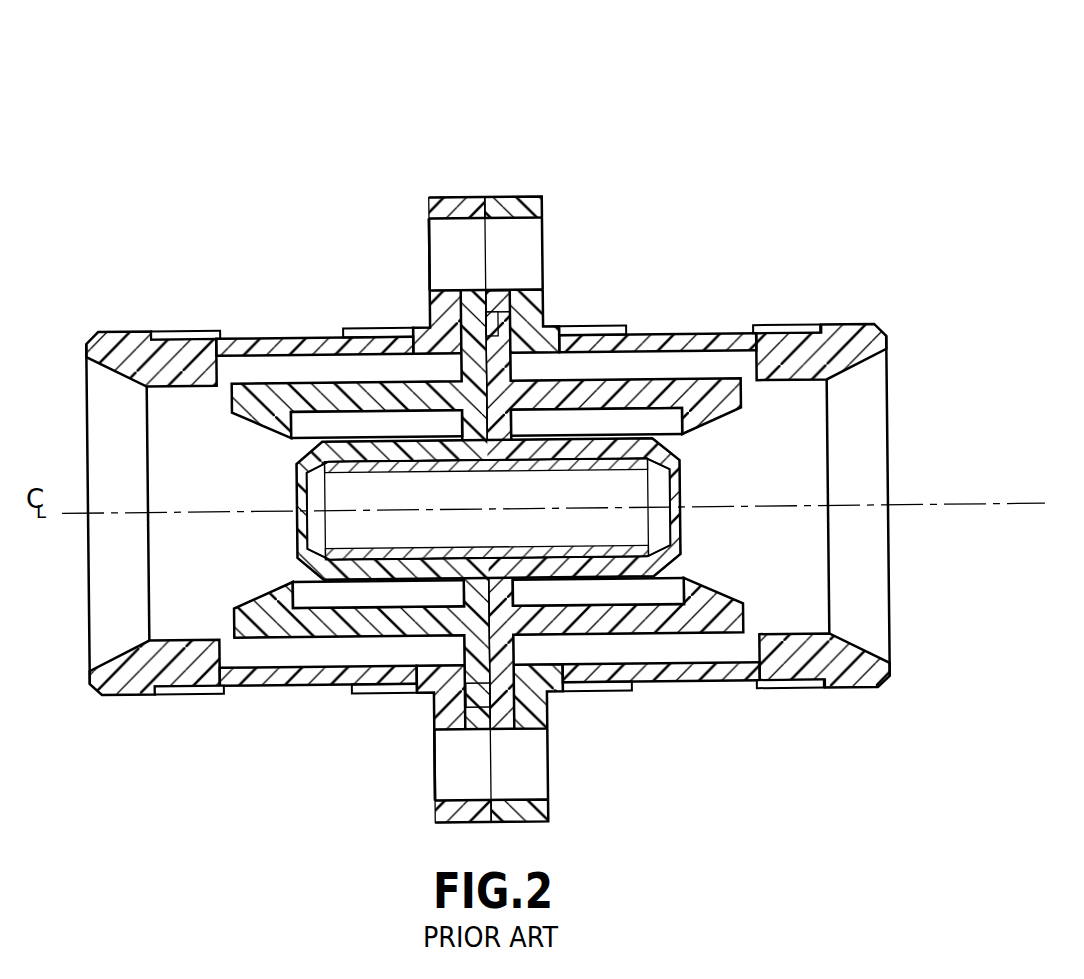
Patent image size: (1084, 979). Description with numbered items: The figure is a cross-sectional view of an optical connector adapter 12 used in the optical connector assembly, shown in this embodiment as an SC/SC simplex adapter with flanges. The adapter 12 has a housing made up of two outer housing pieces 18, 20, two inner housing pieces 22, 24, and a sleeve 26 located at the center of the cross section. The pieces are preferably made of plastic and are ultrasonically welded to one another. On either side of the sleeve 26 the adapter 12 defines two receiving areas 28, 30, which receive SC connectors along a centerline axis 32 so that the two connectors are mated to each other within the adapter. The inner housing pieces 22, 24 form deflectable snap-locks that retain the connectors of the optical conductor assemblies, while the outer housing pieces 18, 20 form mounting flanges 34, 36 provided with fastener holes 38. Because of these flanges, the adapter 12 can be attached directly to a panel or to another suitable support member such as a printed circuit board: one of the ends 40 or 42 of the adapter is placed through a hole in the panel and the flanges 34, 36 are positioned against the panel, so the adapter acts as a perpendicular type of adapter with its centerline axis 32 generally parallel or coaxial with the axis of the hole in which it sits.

The adapter 12 is at (553, 417).
The outer housing piece 18 is at (300, 337).
The outer housing piece 20 is at (652, 335).
The inner housing piece 22 is at (257, 602).
The inner housing piece 24 is at (702, 587).
The sleeve 26 is at (477, 543).
The receiving area 28 is at (225, 460).
The receiving area 30 is at (778, 457).
The centerline axis 32 is at (112, 515).
The mounting flange 34 is at (432, 770).
The mounting flange 36 is at (428, 247).
The fastener hole 38 is at (533, 240).
The end of the adapter 40 is at (207, 698).
The end of the adapter 42 is at (777, 690).